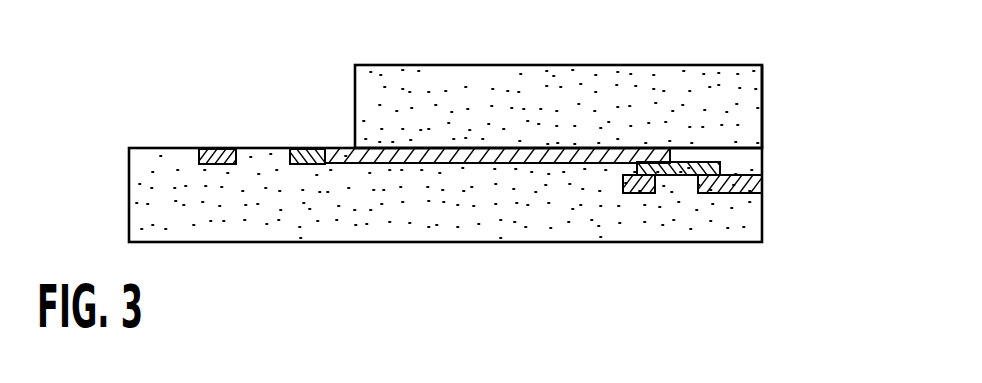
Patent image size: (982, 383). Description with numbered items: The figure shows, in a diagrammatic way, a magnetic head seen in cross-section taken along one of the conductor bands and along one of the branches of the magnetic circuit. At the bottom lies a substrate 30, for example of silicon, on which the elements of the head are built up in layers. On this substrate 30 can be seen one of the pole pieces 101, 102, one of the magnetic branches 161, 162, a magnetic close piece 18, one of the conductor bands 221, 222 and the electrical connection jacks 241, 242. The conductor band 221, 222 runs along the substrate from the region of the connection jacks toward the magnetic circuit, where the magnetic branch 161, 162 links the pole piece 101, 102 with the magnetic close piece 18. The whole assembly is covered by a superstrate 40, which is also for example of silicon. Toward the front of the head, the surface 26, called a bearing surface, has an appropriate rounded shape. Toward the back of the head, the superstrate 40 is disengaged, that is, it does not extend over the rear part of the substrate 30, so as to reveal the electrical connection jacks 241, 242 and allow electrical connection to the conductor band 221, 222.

The substrate 30 is at (748, 218).
The superstrate 40 is at (598, 75).
The bearing surface 26 is at (762, 90).
The electrical connection jack 242 is at (210, 148).
The electrical connection jack 241 is at (310, 148).
The conductor band 221 is at (497, 220).
The conductor band 222 is at (440, 152).
The magnetic branch 161 is at (681, 225).
The magnetic branch 162 is at (672, 178).
The magnetic close piece 18 is at (618, 190).
The pole piece 101 is at (803, 174).
The pole piece 102 is at (752, 183).